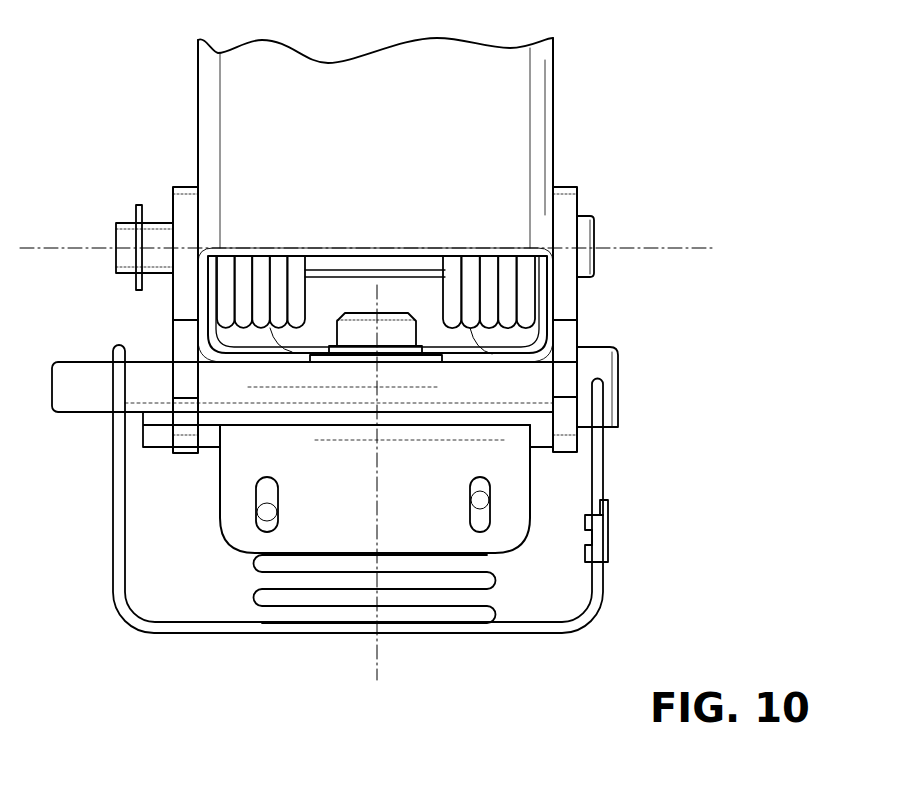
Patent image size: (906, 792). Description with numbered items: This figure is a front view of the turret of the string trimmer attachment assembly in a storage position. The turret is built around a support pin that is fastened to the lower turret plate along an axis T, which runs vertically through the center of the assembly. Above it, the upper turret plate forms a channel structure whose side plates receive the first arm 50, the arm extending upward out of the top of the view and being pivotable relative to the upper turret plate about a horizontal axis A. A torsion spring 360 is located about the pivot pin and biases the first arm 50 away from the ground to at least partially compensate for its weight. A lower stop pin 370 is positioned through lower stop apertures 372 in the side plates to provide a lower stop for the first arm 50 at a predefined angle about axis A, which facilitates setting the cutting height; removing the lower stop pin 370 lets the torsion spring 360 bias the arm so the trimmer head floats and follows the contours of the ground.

The first arm 50 is at (535, 134).
The torsion spring 360 is at (567, 291).
The lower stop pin 370 is at (610, 385).
The lower stop apertures 372 is at (567, 413).
The axis A is at (690, 248).
The axis T is at (377, 668).